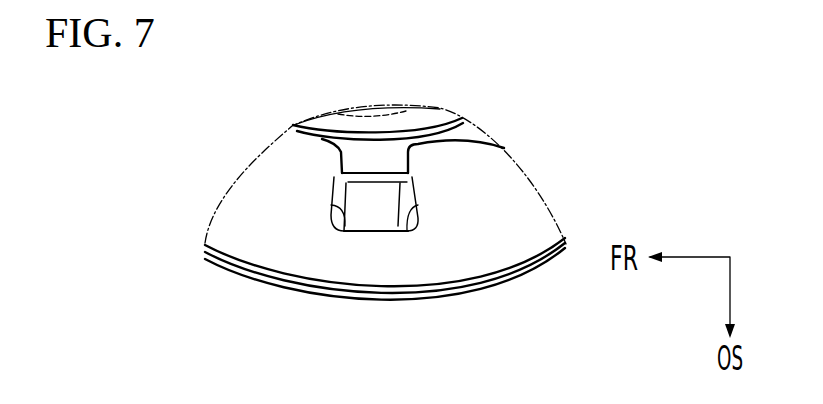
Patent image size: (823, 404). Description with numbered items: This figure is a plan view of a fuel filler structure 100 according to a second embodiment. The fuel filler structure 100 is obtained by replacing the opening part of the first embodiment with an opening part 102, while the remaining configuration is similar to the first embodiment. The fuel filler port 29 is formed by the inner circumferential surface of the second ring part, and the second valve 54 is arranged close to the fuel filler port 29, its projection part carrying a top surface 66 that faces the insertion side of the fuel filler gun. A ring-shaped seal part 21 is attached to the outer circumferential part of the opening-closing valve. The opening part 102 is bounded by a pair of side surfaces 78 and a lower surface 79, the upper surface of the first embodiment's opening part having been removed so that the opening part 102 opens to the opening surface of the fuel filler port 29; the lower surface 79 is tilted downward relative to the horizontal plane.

The fuel filler structure 100 is at (310, 94).
The top surface 66 is at (374, 124).
The fuel filler port 29 is at (441, 141).
The second valve 54 is at (322, 139).
The seal part 21 is at (402, 179).
The side surfaces 78 is at (337, 233).
The lower surface 79 is at (370, 227).
The opening part 102 is at (392, 218).